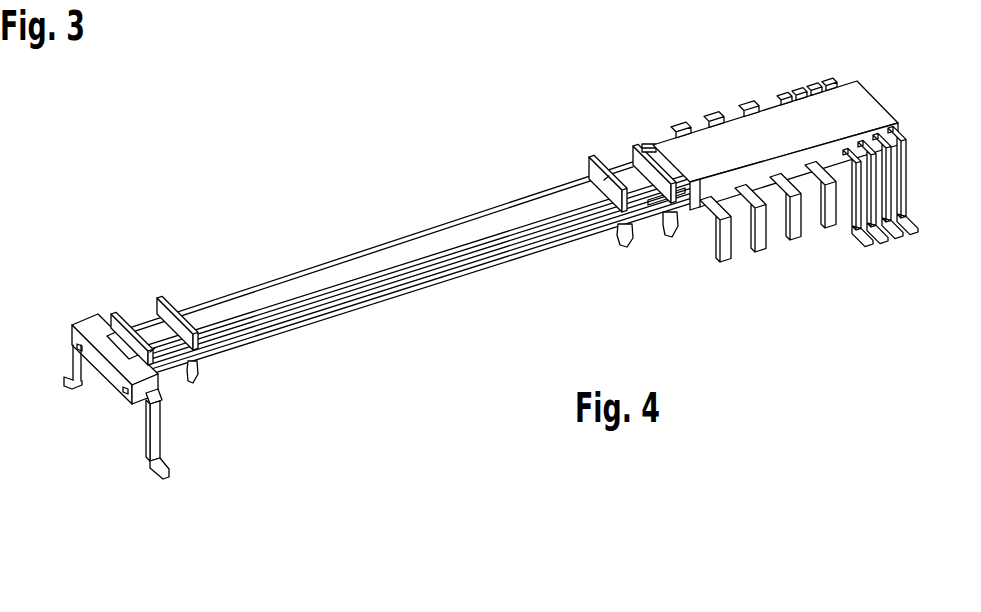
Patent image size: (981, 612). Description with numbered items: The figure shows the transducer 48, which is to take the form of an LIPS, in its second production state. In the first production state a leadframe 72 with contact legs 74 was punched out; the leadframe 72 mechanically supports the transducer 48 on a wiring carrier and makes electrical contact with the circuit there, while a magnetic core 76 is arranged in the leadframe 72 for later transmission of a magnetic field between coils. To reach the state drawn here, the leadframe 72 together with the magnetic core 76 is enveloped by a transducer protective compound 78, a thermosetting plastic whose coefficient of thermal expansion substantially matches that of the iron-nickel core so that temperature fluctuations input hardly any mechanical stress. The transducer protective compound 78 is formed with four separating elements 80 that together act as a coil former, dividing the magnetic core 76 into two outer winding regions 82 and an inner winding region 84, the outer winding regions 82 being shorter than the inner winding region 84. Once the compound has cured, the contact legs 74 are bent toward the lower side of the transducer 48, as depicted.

The transducer 48 is at (374, 263).
The leadframe 72 is at (806, 195).
The contact legs 74 is at (727, 263).
The magnetic core 76 is at (322, 283).
The transducer protective compound 78 is at (850, 100).
The separating elements 80 is at (115, 315).
The outer winding regions 82 is at (143, 322).
The inner winding region 84 is at (415, 250).